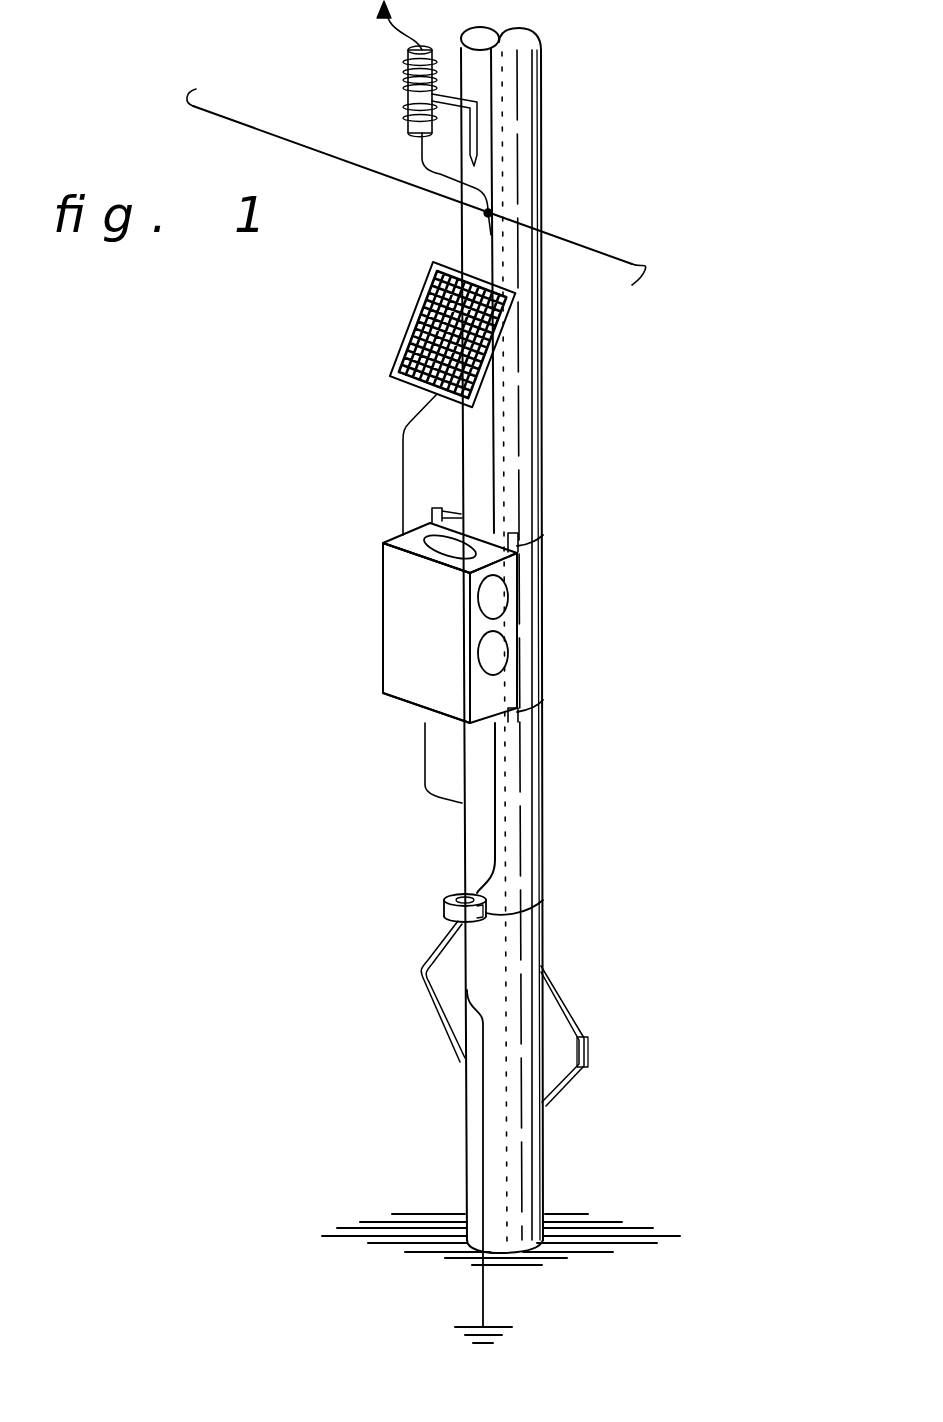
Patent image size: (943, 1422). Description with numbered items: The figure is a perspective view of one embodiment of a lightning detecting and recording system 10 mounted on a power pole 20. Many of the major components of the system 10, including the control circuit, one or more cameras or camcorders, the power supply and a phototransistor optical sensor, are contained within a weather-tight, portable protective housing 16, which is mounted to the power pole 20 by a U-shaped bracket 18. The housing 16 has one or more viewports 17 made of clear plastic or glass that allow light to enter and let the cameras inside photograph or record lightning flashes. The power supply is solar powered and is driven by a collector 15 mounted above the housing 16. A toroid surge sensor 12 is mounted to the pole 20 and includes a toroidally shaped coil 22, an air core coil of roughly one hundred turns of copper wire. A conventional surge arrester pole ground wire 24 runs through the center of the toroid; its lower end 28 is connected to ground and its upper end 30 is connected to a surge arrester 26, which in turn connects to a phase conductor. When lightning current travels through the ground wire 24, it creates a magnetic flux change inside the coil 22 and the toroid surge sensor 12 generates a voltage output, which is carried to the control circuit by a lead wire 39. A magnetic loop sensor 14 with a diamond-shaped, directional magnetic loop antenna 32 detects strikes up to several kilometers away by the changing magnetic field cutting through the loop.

The lightning detecting and recording system 10 is at (328, 653).
The toroid surge sensor 12 is at (436, 899).
The magnetic loop sensor 14 is at (567, 1013).
The collector 15 is at (413, 316).
The housing 16 is at (387, 697).
The viewports 17 is at (438, 540).
The U-shaped bracket 18 is at (545, 537).
The power pole 20 is at (543, 410).
The toroidally shaped coil 22 is at (543, 900).
The surge arrester pole ground wire 24 is at (483, 1277).
The surge arrester 26 is at (396, 84).
The lower end 28 is at (483, 1298).
The upper end 30 is at (420, 160).
The magnetic loop antenna 32 is at (550, 1098).
The lead wire 39 is at (495, 797).